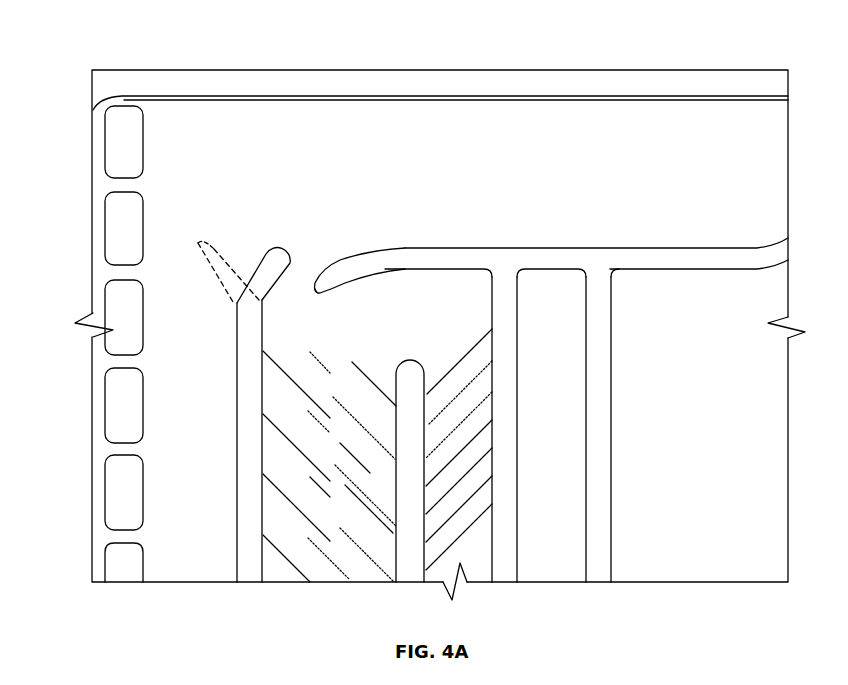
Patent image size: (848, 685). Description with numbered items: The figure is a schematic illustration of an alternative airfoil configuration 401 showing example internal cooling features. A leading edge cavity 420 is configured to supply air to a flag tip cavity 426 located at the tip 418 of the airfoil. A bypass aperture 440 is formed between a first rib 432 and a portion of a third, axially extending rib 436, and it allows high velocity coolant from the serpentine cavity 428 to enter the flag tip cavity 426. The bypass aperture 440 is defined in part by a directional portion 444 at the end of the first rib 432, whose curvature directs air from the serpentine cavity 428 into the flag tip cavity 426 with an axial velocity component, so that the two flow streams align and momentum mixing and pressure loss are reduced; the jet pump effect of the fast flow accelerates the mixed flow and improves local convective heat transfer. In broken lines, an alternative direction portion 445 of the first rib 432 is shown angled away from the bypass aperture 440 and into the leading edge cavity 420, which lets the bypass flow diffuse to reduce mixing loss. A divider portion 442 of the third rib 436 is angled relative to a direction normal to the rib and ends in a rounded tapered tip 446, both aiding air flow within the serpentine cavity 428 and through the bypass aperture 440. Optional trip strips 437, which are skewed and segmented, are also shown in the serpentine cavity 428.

The heat exchanger assembly 401 is at (133, 50).
The tip 418 is at (516, 82).
The leading edge cavity 420 is at (204, 512).
The flag tip cavity 426 is at (526, 151).
The serpentine cavity 428 is at (350, 511).
The first rib 432 is at (245, 373).
The third rib 436 is at (482, 247).
The trip strips 437 is at (373, 390).
The bypass aperture 440 is at (228, 377).
The divider portion 442 is at (340, 275).
The directional portion 444 is at (269, 250).
The direction portion 445 is at (212, 263).
The tapered tip 446 is at (318, 295).